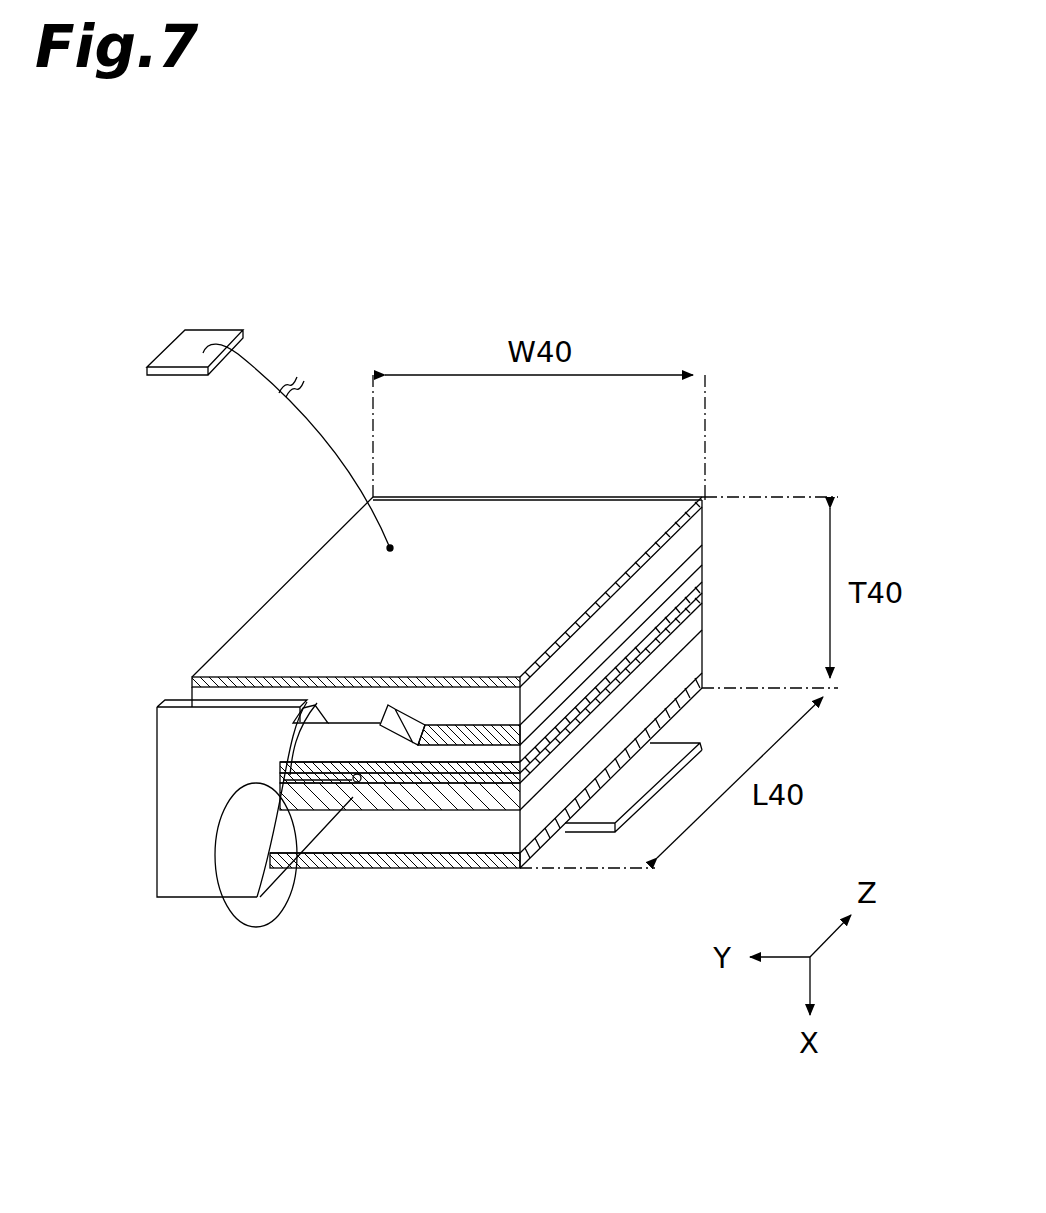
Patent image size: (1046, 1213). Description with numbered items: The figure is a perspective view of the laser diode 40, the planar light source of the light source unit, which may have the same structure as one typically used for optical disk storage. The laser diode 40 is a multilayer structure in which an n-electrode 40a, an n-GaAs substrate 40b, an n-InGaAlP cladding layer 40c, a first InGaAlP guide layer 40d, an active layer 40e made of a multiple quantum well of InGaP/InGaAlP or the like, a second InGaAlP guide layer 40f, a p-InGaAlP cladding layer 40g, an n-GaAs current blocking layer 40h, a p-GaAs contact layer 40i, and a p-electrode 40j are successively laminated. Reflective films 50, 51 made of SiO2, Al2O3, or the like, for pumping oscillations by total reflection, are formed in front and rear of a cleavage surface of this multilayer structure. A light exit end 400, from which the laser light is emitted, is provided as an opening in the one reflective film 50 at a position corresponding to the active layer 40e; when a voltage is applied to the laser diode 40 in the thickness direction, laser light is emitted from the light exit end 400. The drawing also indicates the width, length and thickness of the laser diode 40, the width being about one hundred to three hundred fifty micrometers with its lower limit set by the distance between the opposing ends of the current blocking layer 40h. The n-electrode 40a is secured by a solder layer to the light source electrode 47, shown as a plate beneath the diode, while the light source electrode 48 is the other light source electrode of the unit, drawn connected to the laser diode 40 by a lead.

The laser diode 40 is at (210, 540).
The n-electrode 40a is at (400, 870).
The n-GaAs substrate 40b is at (483, 840).
The n-InGaAlP cladding layer 40c is at (487, 800).
The first InGaAlP guide layer 40d is at (503, 773).
The active layer 40e is at (505, 780).
The second InGaAlP guide layer 40f is at (313, 760).
The p-InGaAlP cladding layer 40g is at (343, 733).
The n-GaAs current blocking layer 40h is at (395, 723).
The p-GaAs contact layer 40i is at (435, 697).
The p-electrode 40j is at (493, 677).
The light exit end 400 is at (357, 783).
The light source electrode 47 is at (660, 752).
The light source electrode 48 is at (220, 335).
The reflective film 50 is at (180, 776).
The reflective film 51 is at (606, 497).